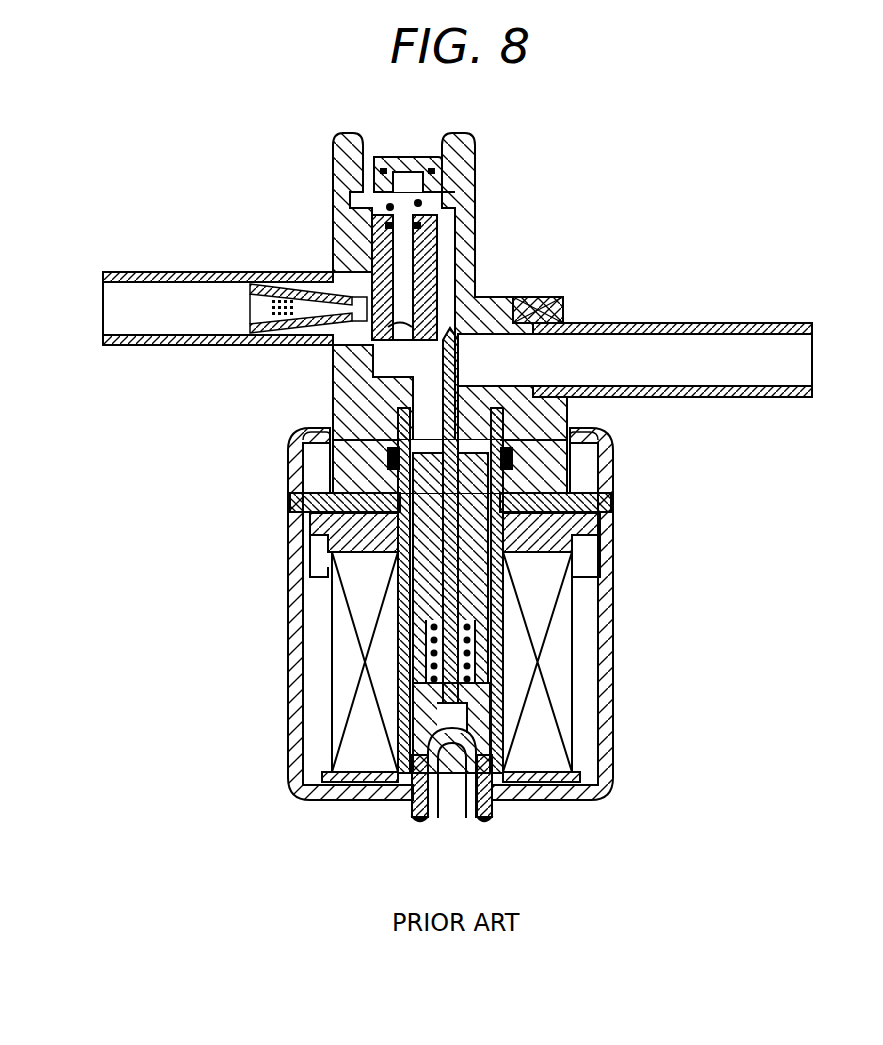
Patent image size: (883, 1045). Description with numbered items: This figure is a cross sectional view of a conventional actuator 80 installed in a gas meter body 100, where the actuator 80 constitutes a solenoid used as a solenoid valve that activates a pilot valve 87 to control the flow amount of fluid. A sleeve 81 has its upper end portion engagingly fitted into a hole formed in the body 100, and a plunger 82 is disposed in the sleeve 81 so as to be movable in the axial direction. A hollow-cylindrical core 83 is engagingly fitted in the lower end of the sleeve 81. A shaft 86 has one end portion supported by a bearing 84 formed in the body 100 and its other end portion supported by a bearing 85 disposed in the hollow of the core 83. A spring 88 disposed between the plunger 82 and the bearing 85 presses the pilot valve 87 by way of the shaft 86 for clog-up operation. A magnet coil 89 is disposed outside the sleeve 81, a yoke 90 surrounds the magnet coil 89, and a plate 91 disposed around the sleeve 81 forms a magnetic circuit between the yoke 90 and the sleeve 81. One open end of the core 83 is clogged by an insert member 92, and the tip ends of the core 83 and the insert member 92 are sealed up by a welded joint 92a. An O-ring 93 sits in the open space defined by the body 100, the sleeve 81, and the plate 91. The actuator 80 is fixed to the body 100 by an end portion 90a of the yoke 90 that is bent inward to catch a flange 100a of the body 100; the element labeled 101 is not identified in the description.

The actuator 80 is at (743, 615).
The sleeve 81 is at (345, 418).
The plunger 82 is at (395, 570).
The core 83 is at (400, 718).
The bearing 84 is at (560, 408).
The bearing 85 is at (413, 685).
The shaft 86 is at (503, 588).
The pilot valve 87 is at (560, 297).
The spring 88 is at (410, 630).
The magnet coil 89 is at (555, 632).
The yoke 90 is at (603, 684).
The end portion 90a is at (605, 455).
The plate 91 is at (290, 502).
The insert member 92 is at (460, 795).
The welded joint 92a is at (478, 823).
The O-ring 93 is at (382, 460).
The gas meter body 100 is at (356, 394).
The flange 100a is at (568, 462).
The crimped lid 101 is at (598, 446).